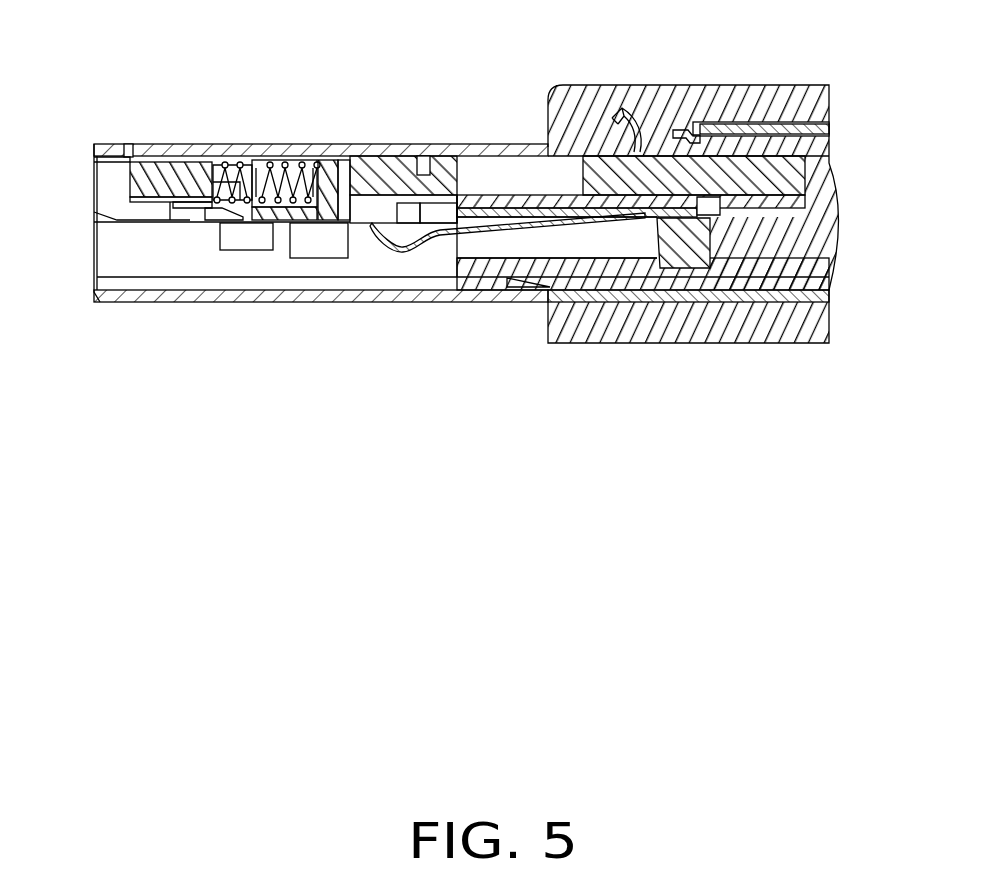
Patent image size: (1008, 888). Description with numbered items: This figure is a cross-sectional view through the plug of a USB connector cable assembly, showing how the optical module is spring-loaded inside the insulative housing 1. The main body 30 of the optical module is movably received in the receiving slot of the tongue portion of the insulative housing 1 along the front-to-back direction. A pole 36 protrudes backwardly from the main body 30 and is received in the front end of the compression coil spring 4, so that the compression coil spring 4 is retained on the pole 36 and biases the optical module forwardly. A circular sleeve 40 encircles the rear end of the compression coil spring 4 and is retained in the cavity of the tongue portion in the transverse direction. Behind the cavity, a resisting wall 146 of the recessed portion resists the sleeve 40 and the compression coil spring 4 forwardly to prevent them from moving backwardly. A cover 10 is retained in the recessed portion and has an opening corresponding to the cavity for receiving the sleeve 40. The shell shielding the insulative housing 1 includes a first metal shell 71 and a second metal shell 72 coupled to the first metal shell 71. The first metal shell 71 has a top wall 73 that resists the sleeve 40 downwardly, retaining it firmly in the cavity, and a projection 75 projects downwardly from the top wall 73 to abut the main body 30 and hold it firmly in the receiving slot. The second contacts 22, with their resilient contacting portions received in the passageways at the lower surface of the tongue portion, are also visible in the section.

The insulative housing 1 is at (522, 147).
The compression coil spring 4 is at (275, 163).
The cover 10 is at (390, 147).
The second contacts 22 is at (437, 237).
The main body 30 is at (175, 175).
The pole 36 is at (238, 157).
The circular sleeve 40 is at (287, 220).
The first metal shell 71 is at (453, 147).
The second metal shell 72 is at (740, 112).
The top wall 73 is at (184, 153).
The projection 75 is at (132, 147).
The resisting wall 146 is at (328, 165).